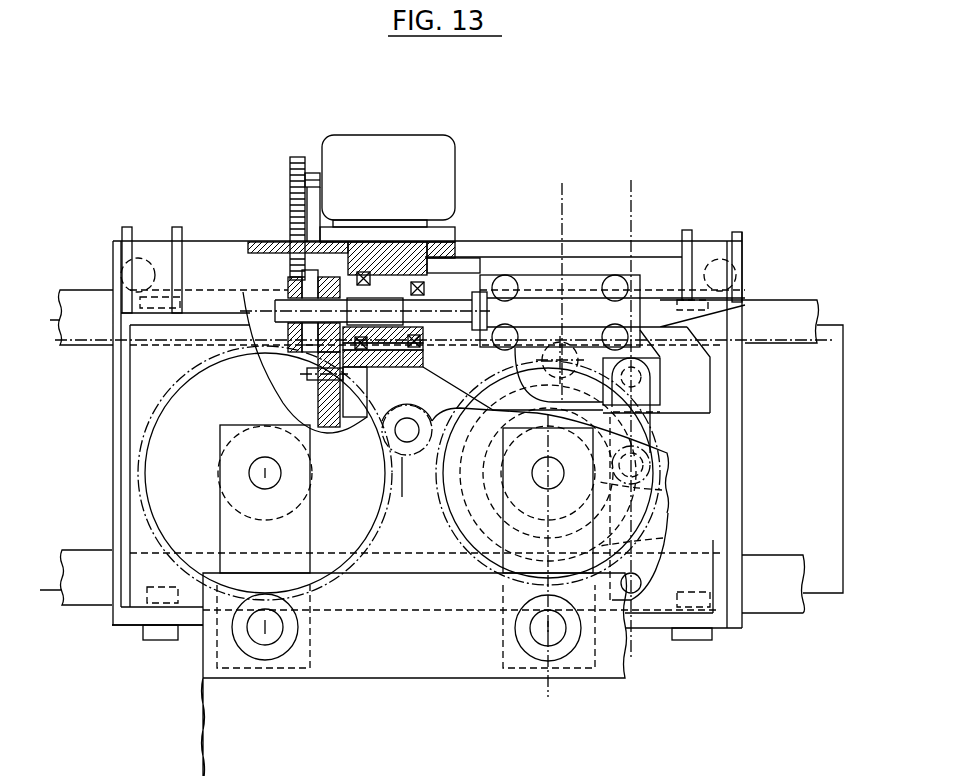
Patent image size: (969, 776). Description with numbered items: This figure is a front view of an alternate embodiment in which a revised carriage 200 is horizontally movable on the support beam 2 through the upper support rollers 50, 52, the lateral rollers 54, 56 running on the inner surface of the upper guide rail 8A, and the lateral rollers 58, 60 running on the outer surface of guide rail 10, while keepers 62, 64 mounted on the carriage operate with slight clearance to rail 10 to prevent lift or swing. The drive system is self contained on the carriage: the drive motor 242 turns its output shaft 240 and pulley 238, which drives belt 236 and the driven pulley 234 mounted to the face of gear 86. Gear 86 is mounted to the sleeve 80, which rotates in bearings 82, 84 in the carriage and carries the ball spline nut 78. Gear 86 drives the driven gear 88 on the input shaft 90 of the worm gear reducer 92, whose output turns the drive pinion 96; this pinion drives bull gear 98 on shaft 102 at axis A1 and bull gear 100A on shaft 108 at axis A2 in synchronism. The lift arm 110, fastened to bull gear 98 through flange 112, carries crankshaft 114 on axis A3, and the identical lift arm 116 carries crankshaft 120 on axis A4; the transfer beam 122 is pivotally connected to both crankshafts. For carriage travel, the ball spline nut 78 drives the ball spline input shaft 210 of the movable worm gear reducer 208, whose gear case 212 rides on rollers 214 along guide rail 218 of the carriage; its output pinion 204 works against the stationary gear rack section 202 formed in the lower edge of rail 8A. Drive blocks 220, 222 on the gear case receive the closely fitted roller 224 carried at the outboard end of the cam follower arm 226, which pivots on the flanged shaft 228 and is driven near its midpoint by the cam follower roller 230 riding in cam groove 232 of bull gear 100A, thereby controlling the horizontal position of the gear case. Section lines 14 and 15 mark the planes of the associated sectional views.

The support beam 2 is at (828, 470).
The upper guide rail 8A is at (786, 298).
The guide rail 10 is at (80, 597).
The section line 14 is at (562, 204).
The section line 15 is at (631, 204).
The upper support roller 50 is at (150, 288).
The upper support roller 52 is at (750, 265).
The lateral roller 54 is at (112, 292).
The lateral roller 56 is at (670, 306).
The lateral roller 58 is at (120, 625).
The lateral roller 60 is at (745, 602).
The keeper 62 is at (160, 640).
The keeper 64 is at (680, 640).
The ball spline nut 78 is at (378, 300).
The sleeve 80 is at (415, 245).
The bearing 82 is at (370, 300).
The bearing 84 is at (473, 285).
The gear 86 is at (297, 237).
The driven gear 88 is at (307, 372).
The input shaft 90 is at (312, 383).
The worm gear reducer 92 is at (390, 394).
The drive pinion 96 is at (407, 470).
The bull gear 98 is at (175, 387).
The bull gear 100A is at (663, 513).
The shaft 102 is at (250, 473).
The shaft 108 is at (543, 468).
The lift arm 110 is at (218, 527).
The flange 112 is at (218, 462).
The crankshaft 114 is at (253, 640).
The lift arm 116 is at (497, 540).
The crankshaft 120 is at (535, 643).
The transfer beam 122 is at (424, 682).
The revised carriage 200 is at (745, 233).
The gear rack section 202 is at (817, 344).
The pinion 204 is at (556, 372).
The worm gear reducer 208 is at (510, 377).
The input shaft 210 is at (479, 290).
The gear case 212 is at (745, 312).
The rollers 214 is at (610, 326).
The guide rail 218 is at (733, 325).
The drive block 220 is at (597, 362).
The drive block 222 is at (742, 414).
The roller 224 is at (652, 436).
The cam follower arm 226 is at (648, 571).
The flanged shaft 228 is at (640, 585).
The cam follower roller 230 is at (662, 490).
The cam groove 232 is at (663, 538).
The driven pulley 234 is at (243, 292).
The belt 236 is at (297, 242).
The pulley 238 is at (288, 173).
The output shaft 240 is at (312, 172).
The drive motor 242 is at (385, 135).
The axis A1 is at (263, 477).
The axis A2 is at (550, 473).
The axis A3 is at (265, 627).
The axis A4 is at (547, 628).